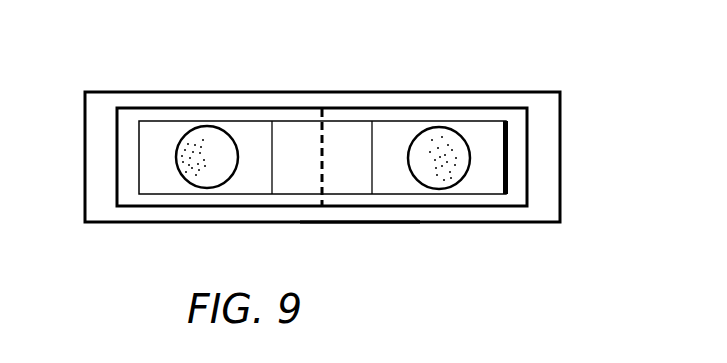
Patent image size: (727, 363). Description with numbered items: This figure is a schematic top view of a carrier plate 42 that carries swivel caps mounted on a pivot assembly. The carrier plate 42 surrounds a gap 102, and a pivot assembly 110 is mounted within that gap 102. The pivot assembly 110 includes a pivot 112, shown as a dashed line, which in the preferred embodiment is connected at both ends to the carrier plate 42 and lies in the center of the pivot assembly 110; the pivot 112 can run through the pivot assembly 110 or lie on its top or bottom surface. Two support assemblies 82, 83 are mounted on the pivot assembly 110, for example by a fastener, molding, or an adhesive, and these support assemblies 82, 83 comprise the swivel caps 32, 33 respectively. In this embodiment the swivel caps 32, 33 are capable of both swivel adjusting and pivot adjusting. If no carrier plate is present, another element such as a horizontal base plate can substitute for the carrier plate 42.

The pivot assembly 110 is at (495, 133).
The gap 102 is at (398, 118).
The pivot 112 is at (320, 140).
The carrier plate 42 is at (355, 215).
The swivel cap 32 is at (200, 137).
The swivel cap 33 is at (438, 135).
The support assembly 82 is at (220, 172).
The support assembly 83 is at (450, 175).